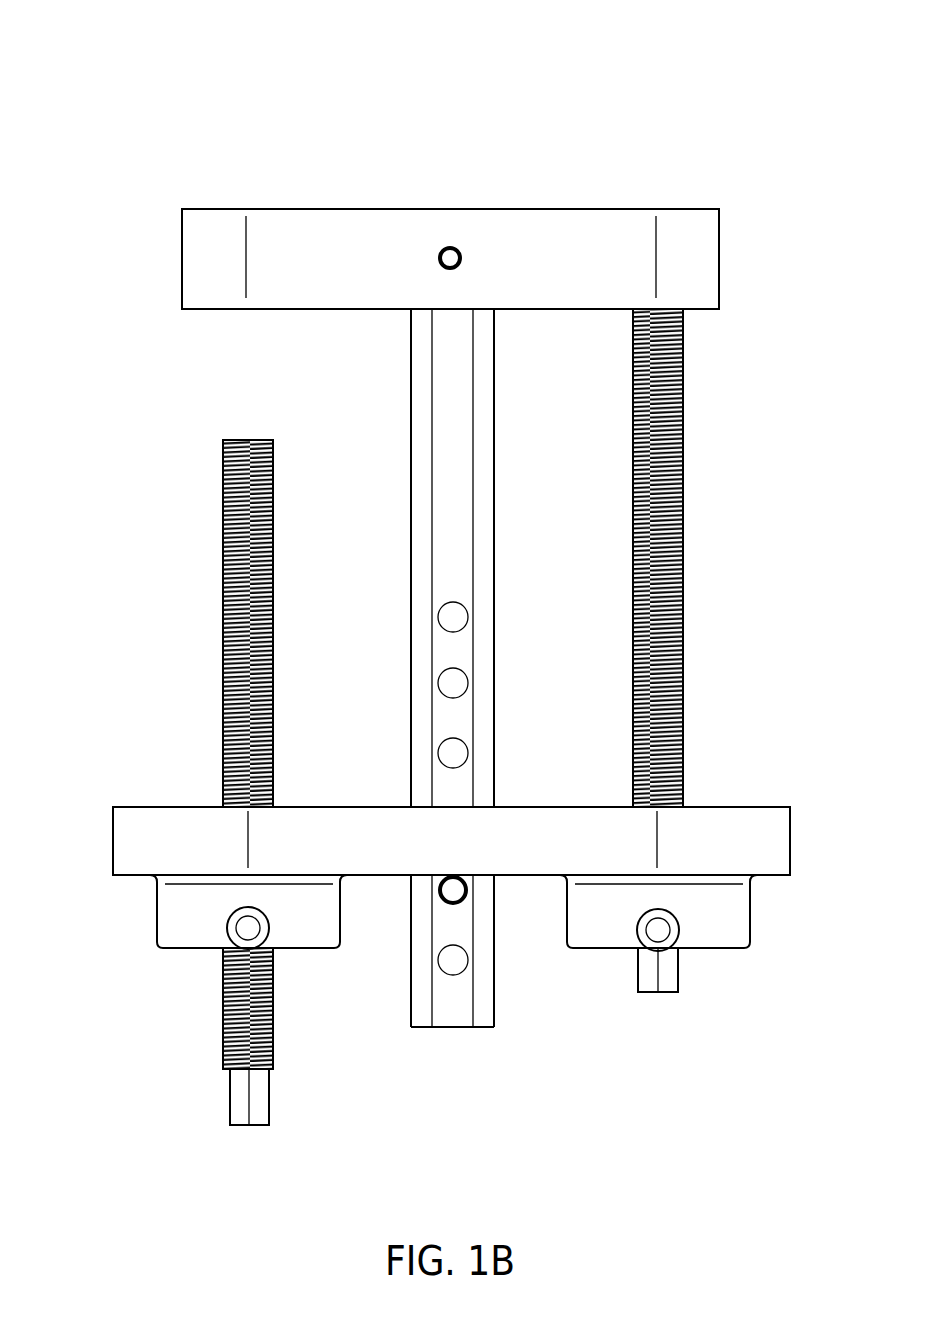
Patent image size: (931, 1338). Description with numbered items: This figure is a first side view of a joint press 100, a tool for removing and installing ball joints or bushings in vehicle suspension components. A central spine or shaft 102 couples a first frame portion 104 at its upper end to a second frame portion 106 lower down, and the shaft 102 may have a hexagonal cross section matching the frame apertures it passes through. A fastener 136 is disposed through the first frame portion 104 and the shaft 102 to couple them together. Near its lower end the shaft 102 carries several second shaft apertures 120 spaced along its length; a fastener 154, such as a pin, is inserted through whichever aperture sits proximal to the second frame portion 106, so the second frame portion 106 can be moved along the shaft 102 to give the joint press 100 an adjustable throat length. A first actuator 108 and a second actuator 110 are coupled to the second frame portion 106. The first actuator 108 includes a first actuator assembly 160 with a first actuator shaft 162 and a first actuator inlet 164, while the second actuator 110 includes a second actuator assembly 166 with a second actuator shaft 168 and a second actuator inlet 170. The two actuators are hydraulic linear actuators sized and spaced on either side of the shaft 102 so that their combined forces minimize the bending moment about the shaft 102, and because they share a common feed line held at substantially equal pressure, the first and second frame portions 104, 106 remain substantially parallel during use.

The joint press 100 is at (365, 108).
The shaft 102 is at (411, 395).
The first frame portion 104 is at (337, 218).
The second frame portion 106 is at (126, 838).
The first actuator 108 is at (320, 950).
The second actuator 110 is at (730, 951).
The second shaft apertures 120 is at (440, 614).
The fastener 136 is at (442, 258).
The fastener 154 is at (448, 891).
The first actuator assembly 160 is at (166, 909).
The first actuator shaft 162 is at (223, 546).
The first actuator inlet 164 is at (236, 930).
The second actuator assembly 166 is at (748, 912).
The second actuator shaft 168 is at (684, 552).
The second actuator inlet 170 is at (646, 932).